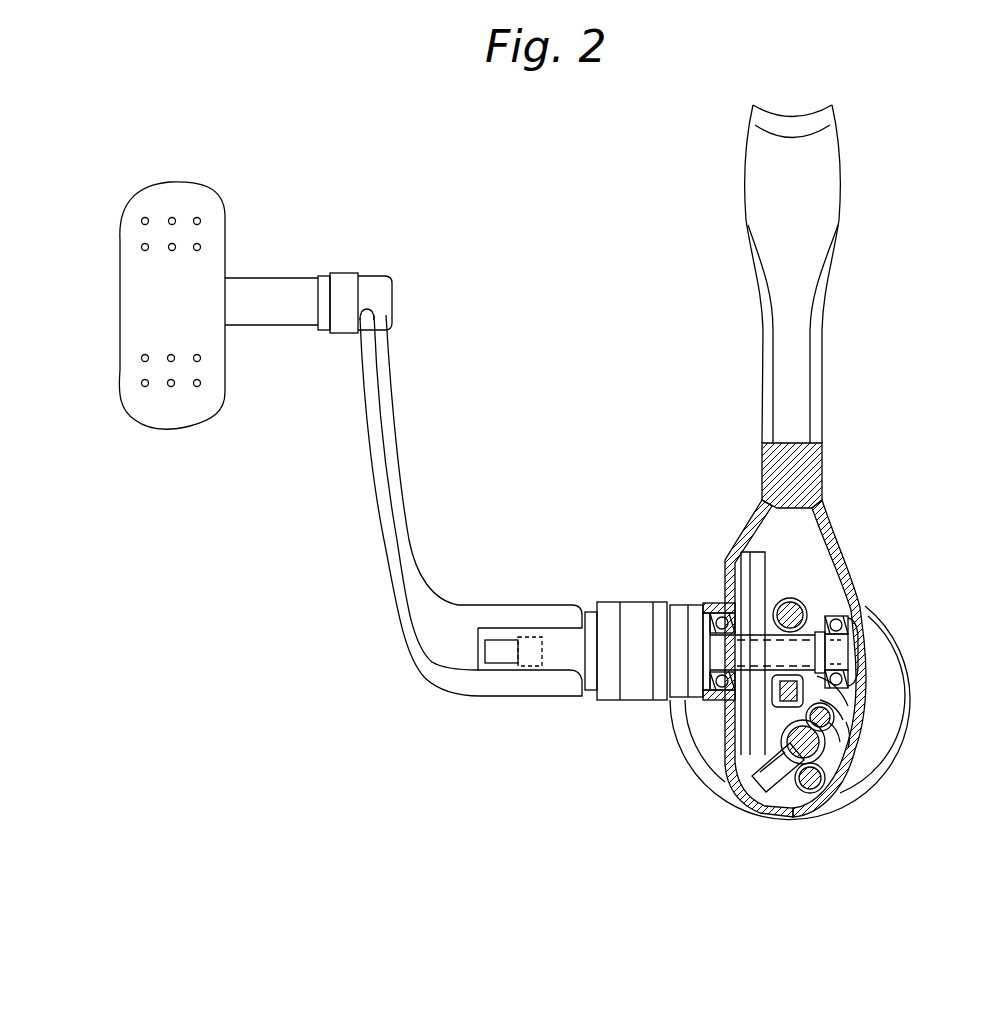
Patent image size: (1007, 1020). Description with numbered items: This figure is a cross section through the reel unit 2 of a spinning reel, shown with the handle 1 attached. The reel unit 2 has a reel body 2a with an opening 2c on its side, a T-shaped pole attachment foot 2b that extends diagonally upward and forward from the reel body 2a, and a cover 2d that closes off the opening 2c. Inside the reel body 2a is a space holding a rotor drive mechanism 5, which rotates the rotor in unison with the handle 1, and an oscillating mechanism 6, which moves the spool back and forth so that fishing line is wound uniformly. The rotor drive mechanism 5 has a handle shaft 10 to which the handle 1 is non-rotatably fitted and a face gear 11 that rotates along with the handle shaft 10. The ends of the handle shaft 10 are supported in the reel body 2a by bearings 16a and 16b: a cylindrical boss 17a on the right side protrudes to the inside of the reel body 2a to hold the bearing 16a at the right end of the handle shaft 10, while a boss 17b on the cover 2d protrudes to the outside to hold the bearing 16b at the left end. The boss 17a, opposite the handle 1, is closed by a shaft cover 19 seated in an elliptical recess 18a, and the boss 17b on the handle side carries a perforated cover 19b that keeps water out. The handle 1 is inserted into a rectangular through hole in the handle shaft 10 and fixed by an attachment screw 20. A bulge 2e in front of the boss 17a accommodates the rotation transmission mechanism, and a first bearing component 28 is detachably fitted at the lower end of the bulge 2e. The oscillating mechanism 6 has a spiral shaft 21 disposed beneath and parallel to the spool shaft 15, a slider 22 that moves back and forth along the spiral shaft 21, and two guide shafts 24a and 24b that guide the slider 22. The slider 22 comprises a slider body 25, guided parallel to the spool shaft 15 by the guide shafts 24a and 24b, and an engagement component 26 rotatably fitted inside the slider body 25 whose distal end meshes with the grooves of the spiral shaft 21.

The handle 1 is at (410, 378).
The reel unit 2 is at (840, 526).
The reel body 2a is at (863, 577).
The pole attachment foot 2b is at (813, 333).
The opening 2c is at (772, 499).
The cover 2d is at (735, 548).
The bulge 2e is at (880, 697).
The rotor drive mechanism 5 is at (771, 591).
The oscillating mechanism 6 is at (752, 782).
The handle shaft 10 is at (812, 630).
The face gear 11 is at (790, 553).
The spool shaft 15 is at (782, 778).
The bearing 16a is at (860, 703).
The bearing 16b is at (705, 698).
The cylindrical boss 17a is at (847, 723).
The boss 17b is at (705, 690).
The elliptical recess 18a is at (866, 614).
The shaft cover 19 is at (872, 650).
The perforated cover 19b is at (683, 612).
The attachment screw 20 is at (848, 662).
The spiral shaft 21 is at (803, 800).
The slider 22 is at (832, 728).
The guide shaft 24a is at (826, 782).
The guide shaft 24b is at (818, 792).
The slider body 25 is at (775, 727).
The engagement component 26 is at (780, 793).
The first bearing component 28 is at (910, 770).